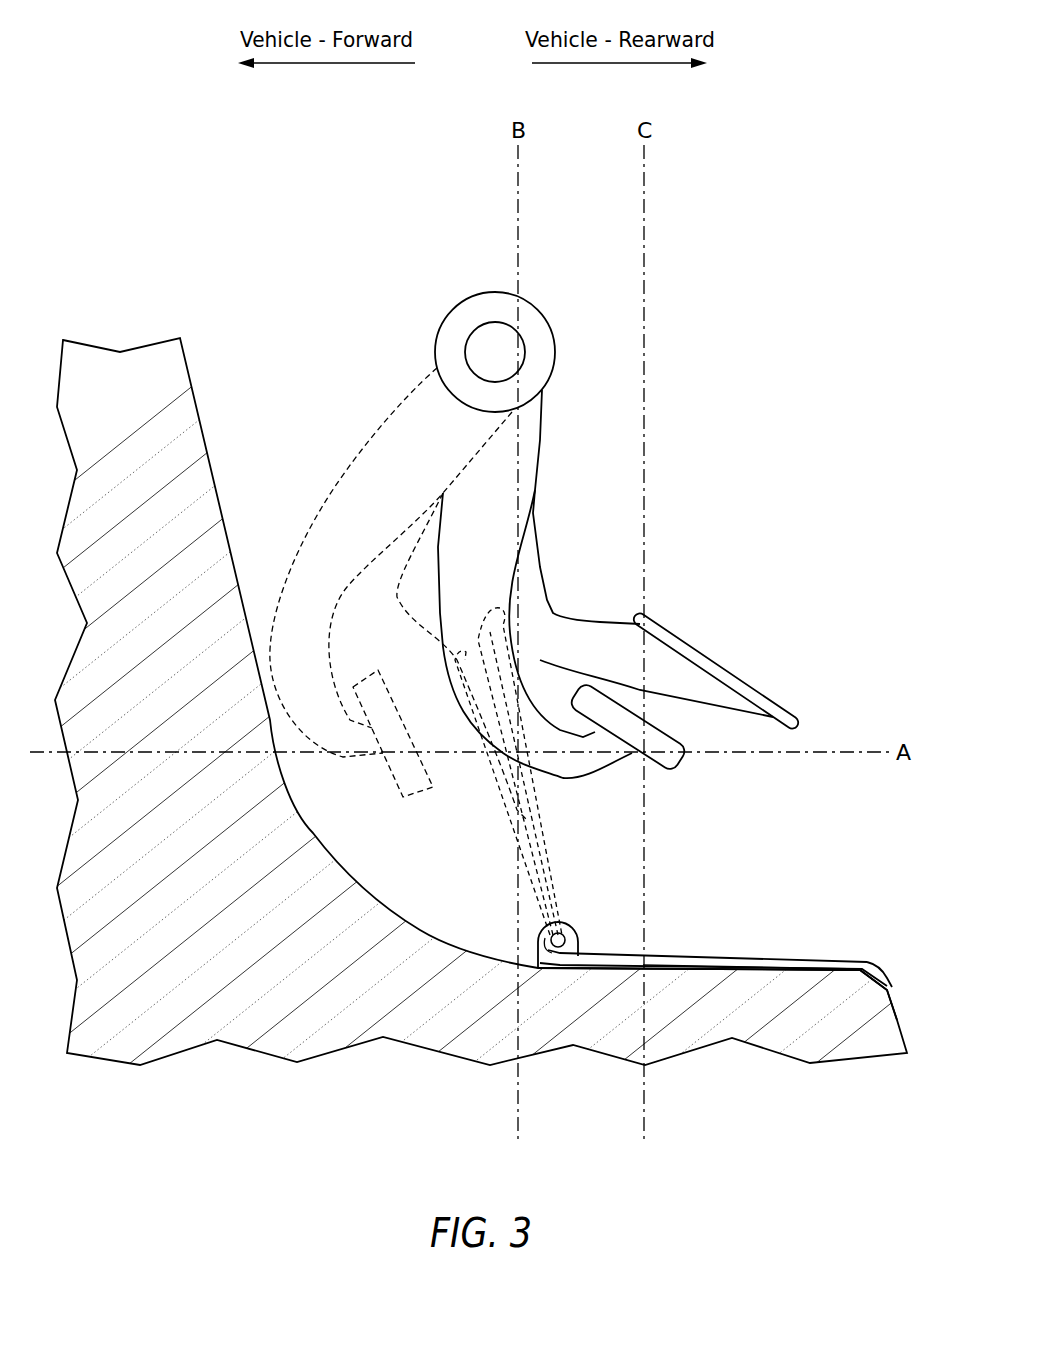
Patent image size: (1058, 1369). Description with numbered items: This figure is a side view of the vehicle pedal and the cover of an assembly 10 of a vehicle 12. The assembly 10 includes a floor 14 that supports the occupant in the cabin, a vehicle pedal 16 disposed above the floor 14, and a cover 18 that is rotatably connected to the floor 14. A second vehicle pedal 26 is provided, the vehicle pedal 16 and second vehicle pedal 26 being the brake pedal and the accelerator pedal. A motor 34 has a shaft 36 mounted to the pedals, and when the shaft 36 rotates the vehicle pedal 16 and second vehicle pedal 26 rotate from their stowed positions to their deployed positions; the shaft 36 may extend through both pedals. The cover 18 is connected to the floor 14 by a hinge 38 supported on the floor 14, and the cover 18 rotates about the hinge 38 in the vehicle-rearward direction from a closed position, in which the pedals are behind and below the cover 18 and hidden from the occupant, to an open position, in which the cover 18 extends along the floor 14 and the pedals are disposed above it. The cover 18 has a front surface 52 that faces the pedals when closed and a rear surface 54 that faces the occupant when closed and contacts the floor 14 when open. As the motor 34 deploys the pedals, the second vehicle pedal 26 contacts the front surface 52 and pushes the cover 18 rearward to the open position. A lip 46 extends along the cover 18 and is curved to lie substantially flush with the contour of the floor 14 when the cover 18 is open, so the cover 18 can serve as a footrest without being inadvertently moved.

The assembly 10 is at (752, 296).
The vehicle 12 is at (190, 243).
The floor 14 is at (787, 990).
The vehicle pedal 16 is at (517, 460).
The cover 18 is at (563, 892).
The second vehicle pedal 26 is at (553, 625).
The motor 34 is at (475, 293).
The shaft 36 is at (510, 347).
The hinge 38 is at (538, 945).
The lip 46 is at (487, 618).
The front surface 52 is at (552, 882).
The rear surface 54 is at (553, 850).